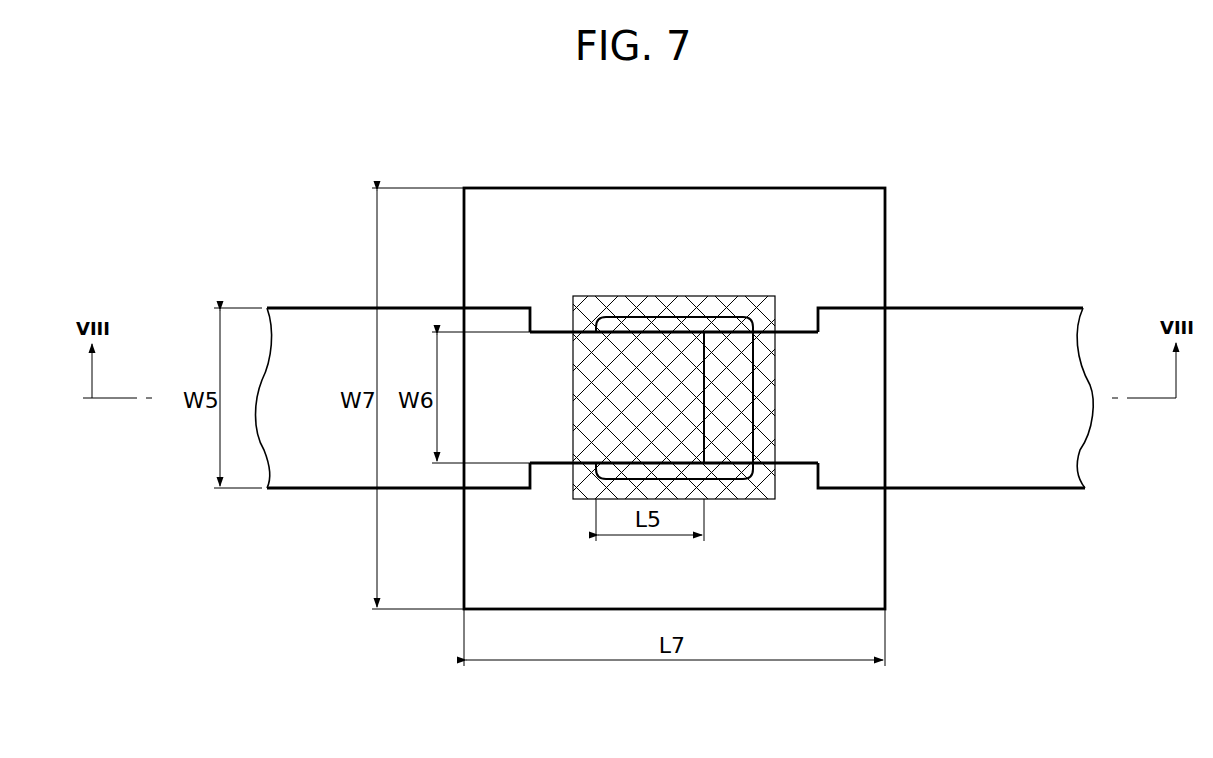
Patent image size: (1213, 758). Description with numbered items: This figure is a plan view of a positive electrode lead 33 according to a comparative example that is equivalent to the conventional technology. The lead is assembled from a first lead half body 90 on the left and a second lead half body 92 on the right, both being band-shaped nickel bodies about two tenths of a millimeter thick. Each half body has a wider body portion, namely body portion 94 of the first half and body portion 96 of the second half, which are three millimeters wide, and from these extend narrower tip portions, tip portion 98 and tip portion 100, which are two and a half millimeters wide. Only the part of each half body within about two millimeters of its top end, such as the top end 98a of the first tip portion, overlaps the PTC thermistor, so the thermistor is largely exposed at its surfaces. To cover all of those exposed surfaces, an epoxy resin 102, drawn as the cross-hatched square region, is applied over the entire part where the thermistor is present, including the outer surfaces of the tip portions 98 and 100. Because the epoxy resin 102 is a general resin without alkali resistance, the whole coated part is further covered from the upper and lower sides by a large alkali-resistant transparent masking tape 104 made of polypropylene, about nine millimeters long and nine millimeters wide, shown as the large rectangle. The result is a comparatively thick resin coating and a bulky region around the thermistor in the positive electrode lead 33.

The positive electrode lead 33 is at (924, 210).
The first lead half body 90 is at (307, 306).
The second lead half body 92 is at (1008, 491).
The body portion 94 is at (300, 437).
The body portion 96 is at (1001, 352).
The tip portion 98 is at (639, 356).
The top end 98a is at (717, 392).
The tip portion 100 is at (794, 405).
The epoxy resin 102 is at (762, 296).
The masking tape 104 is at (563, 218).